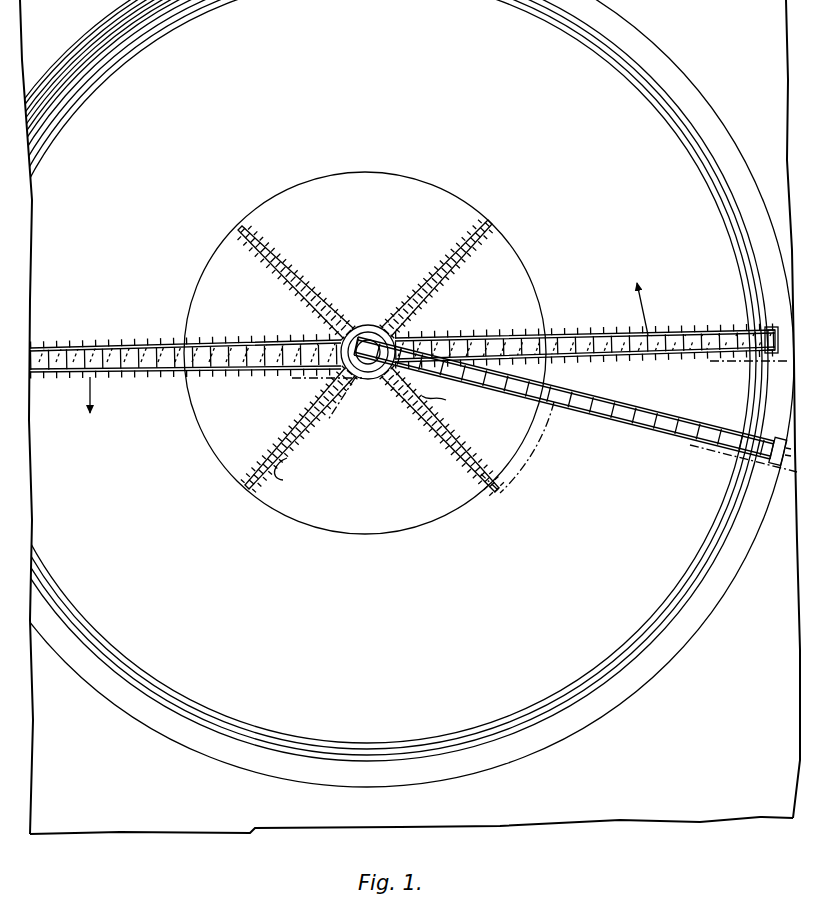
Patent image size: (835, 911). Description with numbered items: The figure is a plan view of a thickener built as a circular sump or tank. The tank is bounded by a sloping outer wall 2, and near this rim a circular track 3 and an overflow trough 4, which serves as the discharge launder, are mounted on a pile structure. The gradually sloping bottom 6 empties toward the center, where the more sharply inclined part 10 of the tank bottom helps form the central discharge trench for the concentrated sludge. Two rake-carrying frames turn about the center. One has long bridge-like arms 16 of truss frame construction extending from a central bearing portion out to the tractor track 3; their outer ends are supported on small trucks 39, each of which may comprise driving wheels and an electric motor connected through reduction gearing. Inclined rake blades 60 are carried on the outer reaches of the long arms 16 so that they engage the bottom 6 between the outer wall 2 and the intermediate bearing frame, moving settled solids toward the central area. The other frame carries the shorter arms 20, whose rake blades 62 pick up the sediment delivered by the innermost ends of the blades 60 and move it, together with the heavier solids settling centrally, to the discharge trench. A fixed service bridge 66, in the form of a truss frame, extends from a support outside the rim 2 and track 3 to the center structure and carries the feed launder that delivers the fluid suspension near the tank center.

The sloping outer wall 2 is at (298, 380).
The circular track 3 is at (697, 116).
The overflow trough 4 is at (655, 85).
The bottom 6 is at (580, 68).
The more sharply inclined part of the tank bottom 10 is at (372, 190).
The bridge-like arms 16 is at (120, 343).
The shorter arms 20 is at (272, 264).
The trucks 39 is at (777, 326).
The rake blades 60 is at (130, 378).
The rake blades 62 is at (374, 441).
The fixed service bridge 66 is at (613, 430).